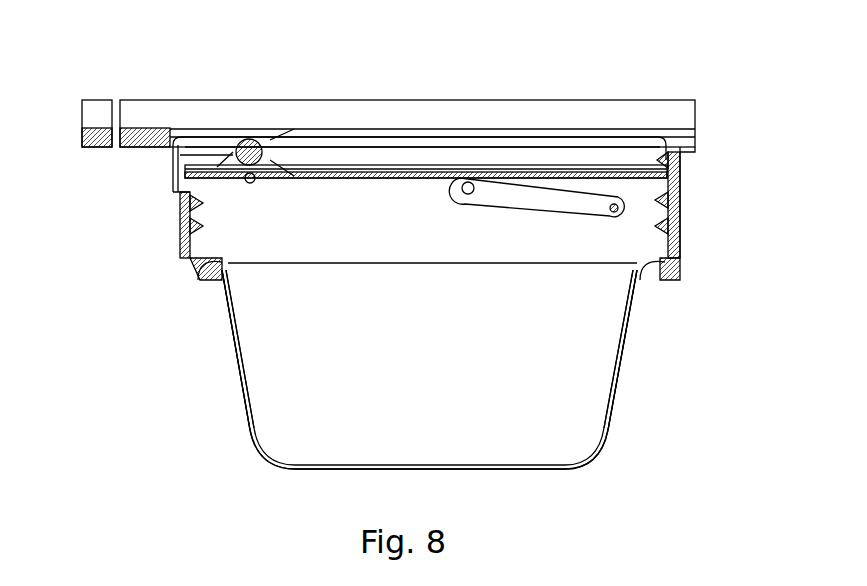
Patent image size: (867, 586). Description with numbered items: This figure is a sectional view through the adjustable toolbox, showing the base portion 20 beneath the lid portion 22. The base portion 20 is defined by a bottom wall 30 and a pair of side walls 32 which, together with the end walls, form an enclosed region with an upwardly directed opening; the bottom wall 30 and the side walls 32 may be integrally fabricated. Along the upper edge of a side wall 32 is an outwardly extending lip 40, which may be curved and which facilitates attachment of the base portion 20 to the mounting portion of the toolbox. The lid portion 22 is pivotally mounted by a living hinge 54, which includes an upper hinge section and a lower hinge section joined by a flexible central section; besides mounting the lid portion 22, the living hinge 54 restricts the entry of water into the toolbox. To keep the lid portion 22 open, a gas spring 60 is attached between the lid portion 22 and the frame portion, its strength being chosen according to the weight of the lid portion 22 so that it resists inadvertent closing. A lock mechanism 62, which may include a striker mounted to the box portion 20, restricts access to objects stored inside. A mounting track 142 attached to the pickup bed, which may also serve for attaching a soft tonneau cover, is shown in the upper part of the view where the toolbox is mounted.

The base portion 20 is at (267, 458).
The lid portion 22 is at (378, 137).
The bottom wall 30 is at (478, 463).
The side walls 32 is at (643, 373).
The outwardly extending lip 40 is at (650, 254).
The living hinge 54 is at (680, 180).
The gas spring 60 is at (515, 207).
The lock mechanism 62 is at (248, 139).
The mounting track 142 is at (552, 110).